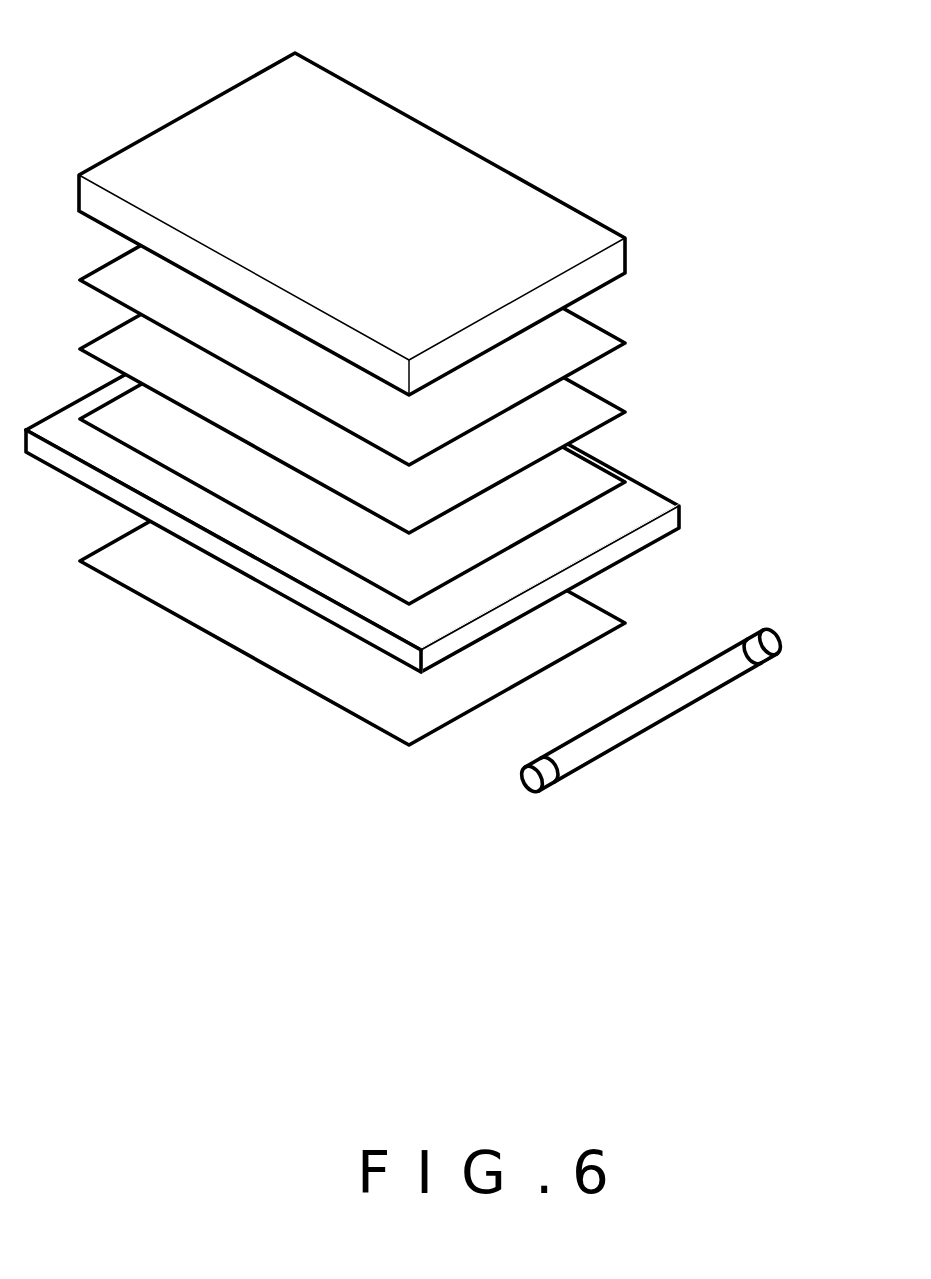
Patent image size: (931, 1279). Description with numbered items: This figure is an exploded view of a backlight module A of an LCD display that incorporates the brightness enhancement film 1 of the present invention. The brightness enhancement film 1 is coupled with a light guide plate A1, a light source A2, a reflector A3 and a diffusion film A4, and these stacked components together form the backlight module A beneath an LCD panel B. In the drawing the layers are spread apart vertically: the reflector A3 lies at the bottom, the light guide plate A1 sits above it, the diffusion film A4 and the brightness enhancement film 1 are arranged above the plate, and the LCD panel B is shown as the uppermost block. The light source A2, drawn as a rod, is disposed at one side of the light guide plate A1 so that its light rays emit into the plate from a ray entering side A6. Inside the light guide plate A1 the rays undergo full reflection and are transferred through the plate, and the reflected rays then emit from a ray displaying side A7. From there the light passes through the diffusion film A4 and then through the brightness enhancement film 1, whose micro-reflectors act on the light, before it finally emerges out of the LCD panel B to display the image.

The backlight module A is at (437, 476).
The light guide plate A1 is at (376, 539).
The light source A2 is at (605, 735).
The reflector A3 is at (572, 628).
The diffusion film A4 is at (590, 487).
The ray entering side A6 is at (640, 538).
The ray displaying side A7 is at (327, 573).
The brightness enhancement film 1 is at (587, 415).
The LCD panel B is at (502, 211).